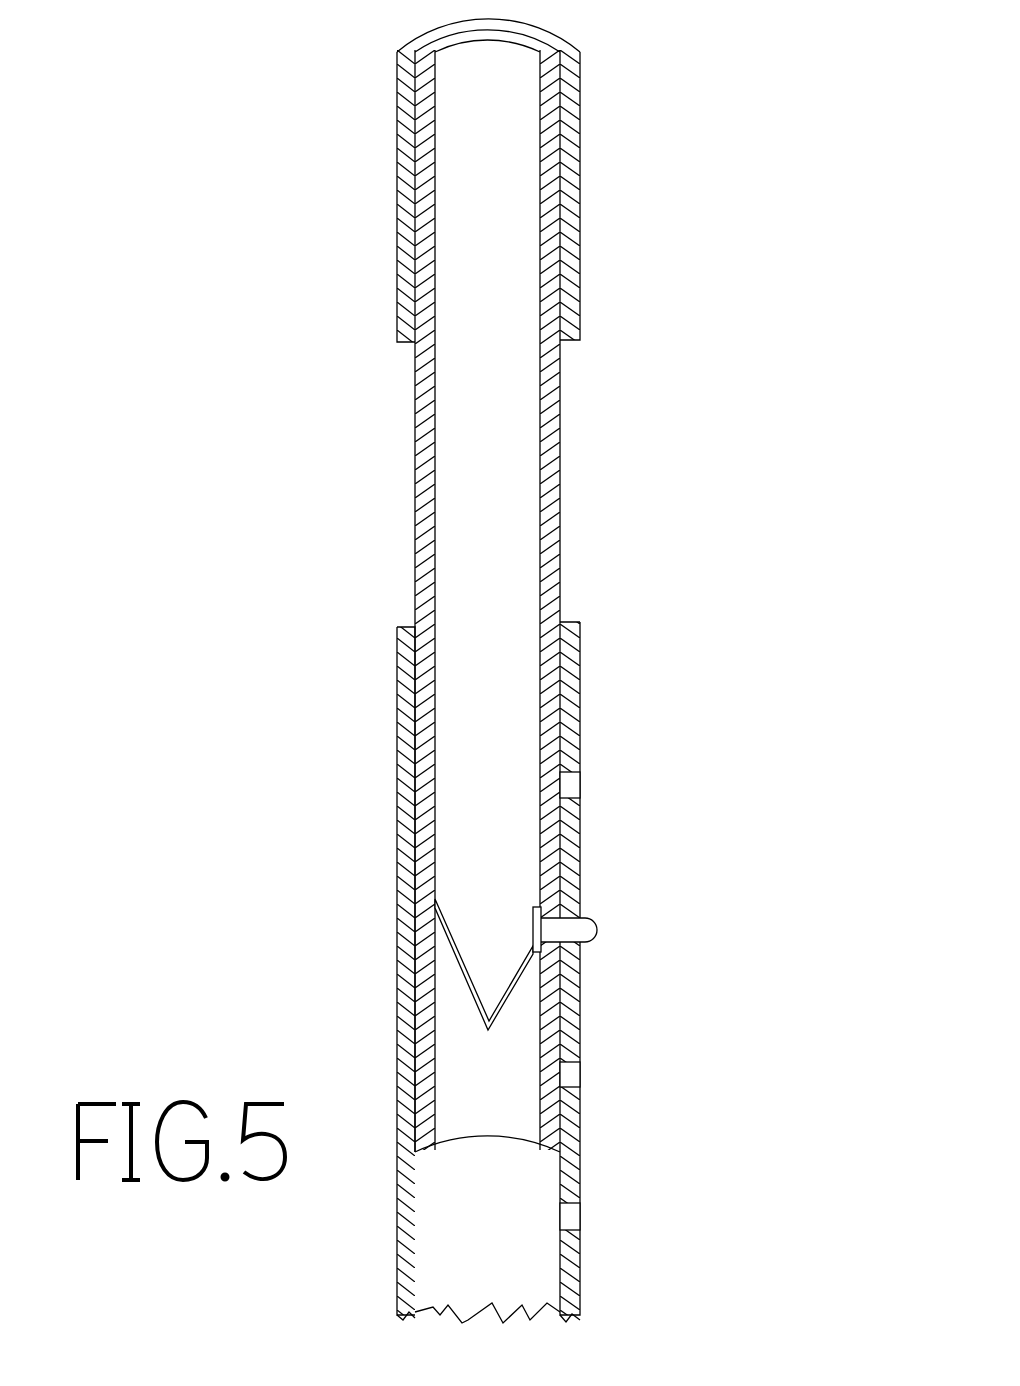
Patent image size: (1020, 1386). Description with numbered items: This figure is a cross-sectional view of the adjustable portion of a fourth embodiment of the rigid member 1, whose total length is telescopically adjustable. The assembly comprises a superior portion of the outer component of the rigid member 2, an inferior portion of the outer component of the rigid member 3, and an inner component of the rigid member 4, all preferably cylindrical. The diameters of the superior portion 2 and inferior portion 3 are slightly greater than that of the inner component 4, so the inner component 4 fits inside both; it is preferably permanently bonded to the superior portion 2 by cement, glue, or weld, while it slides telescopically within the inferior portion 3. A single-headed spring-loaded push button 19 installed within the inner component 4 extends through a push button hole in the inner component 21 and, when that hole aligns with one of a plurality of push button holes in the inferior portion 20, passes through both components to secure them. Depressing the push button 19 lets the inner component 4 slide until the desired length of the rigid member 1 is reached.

The rigid member 1 is at (240, 430).
The superior portion of the outer component of the rigid member 2 is at (584, 207).
The inferior portion of the outer component of the rigid member 3 is at (395, 730).
The inner component of the rigid member 4 is at (564, 478).
The spring-loaded push button 19 is at (600, 930).
The push button holes in the inferior portion of the outer component of the rigid me 20 is at (584, 787).
The push button hole in the inner component of the rigid member 21 is at (547, 905).